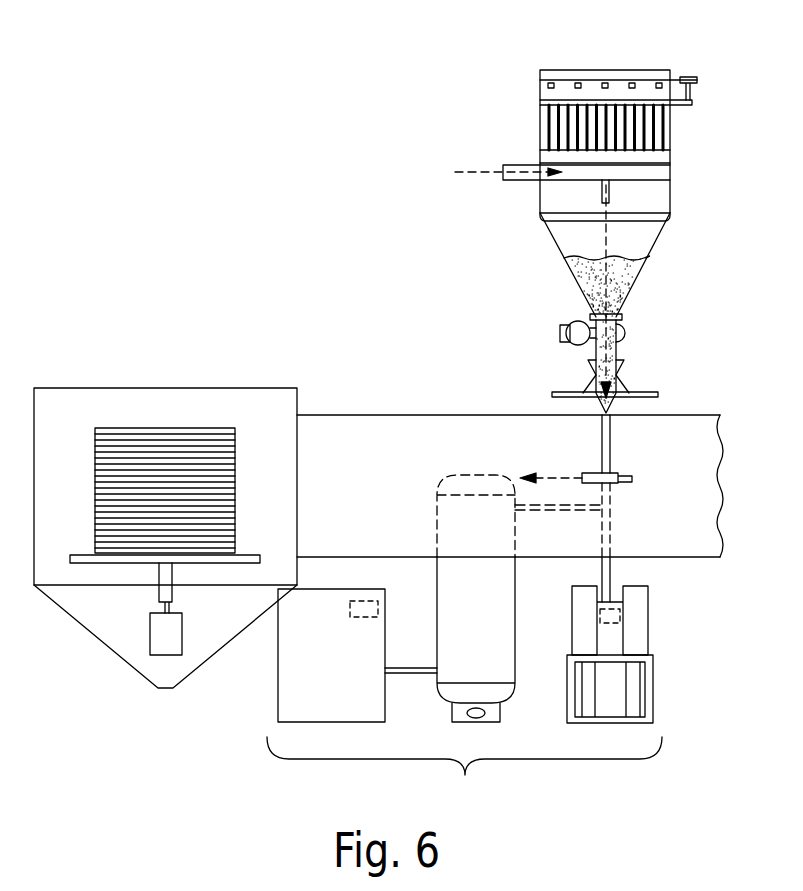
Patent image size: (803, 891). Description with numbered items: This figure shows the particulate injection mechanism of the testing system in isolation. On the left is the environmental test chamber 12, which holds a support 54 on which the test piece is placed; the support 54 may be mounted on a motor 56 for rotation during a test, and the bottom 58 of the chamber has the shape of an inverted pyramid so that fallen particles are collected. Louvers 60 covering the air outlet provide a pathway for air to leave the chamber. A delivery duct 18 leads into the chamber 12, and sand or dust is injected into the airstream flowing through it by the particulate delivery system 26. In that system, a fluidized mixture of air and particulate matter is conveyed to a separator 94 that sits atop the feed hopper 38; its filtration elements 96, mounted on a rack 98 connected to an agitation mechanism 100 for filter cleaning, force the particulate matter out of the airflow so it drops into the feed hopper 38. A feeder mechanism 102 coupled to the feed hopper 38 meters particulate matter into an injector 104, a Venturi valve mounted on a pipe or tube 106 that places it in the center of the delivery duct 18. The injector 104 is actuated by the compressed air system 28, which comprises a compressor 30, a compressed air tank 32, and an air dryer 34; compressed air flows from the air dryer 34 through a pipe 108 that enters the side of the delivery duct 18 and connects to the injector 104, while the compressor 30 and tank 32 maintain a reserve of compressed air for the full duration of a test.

The environmental test chamber 12 is at (165, 504).
The delivery duct 18 is at (447, 428).
The particulate delivery system 26 is at (579, 207).
The compressed air system 28 is at (460, 644).
The compressor 30 is at (278, 685).
The compressed air tank 32 is at (497, 612).
The air dryer 34 is at (640, 628).
The feed hopper 38 is at (562, 228).
The support 54 is at (78, 555).
The motor 56 is at (175, 630).
The bottom 58 is at (100, 640).
The louvers 60 is at (200, 434).
The separator 94 is at (548, 160).
The filtration elements 96 is at (553, 123).
The rack 98 is at (560, 80).
The agitation mechanism 100 is at (688, 77).
The feeder mechanism 102 is at (573, 342).
The injector 104 is at (612, 473).
The pipe or tube 106 is at (601, 432).
The pipe 108 is at (611, 507).